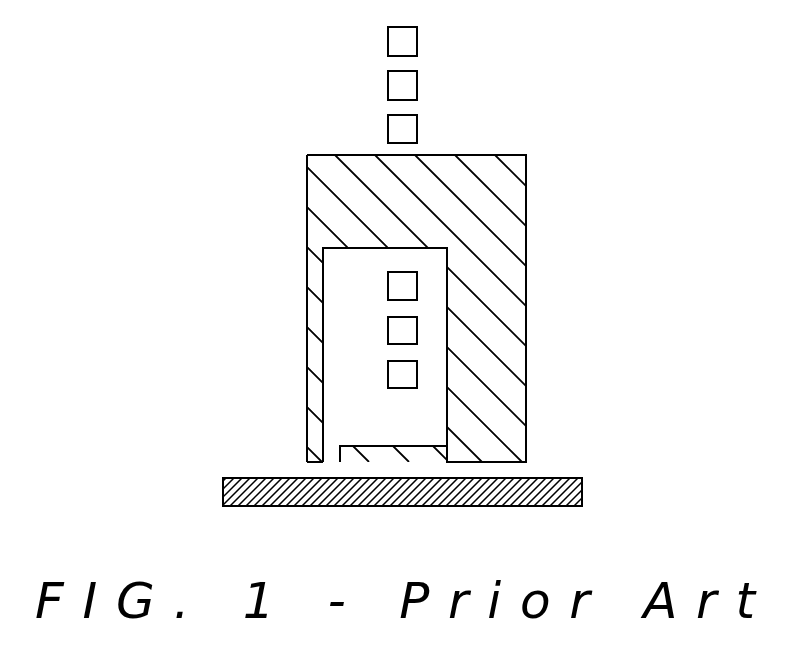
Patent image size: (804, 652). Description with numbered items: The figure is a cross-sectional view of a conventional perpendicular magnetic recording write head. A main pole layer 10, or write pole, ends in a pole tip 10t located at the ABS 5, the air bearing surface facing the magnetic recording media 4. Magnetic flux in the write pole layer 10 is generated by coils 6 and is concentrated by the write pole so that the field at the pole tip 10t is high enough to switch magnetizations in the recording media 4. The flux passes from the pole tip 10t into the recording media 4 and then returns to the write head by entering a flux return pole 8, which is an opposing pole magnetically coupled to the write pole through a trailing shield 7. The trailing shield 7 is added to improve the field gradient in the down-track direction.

The magnetic recording media 4 is at (237, 490).
The ABS 5 is at (556, 462).
The coils 6 is at (405, 283).
The trailing shield 7 is at (514, 337).
The flux return pole 8 is at (418, 452).
The main pole layer 10 is at (312, 441).
The pole tip 10t is at (313, 462).